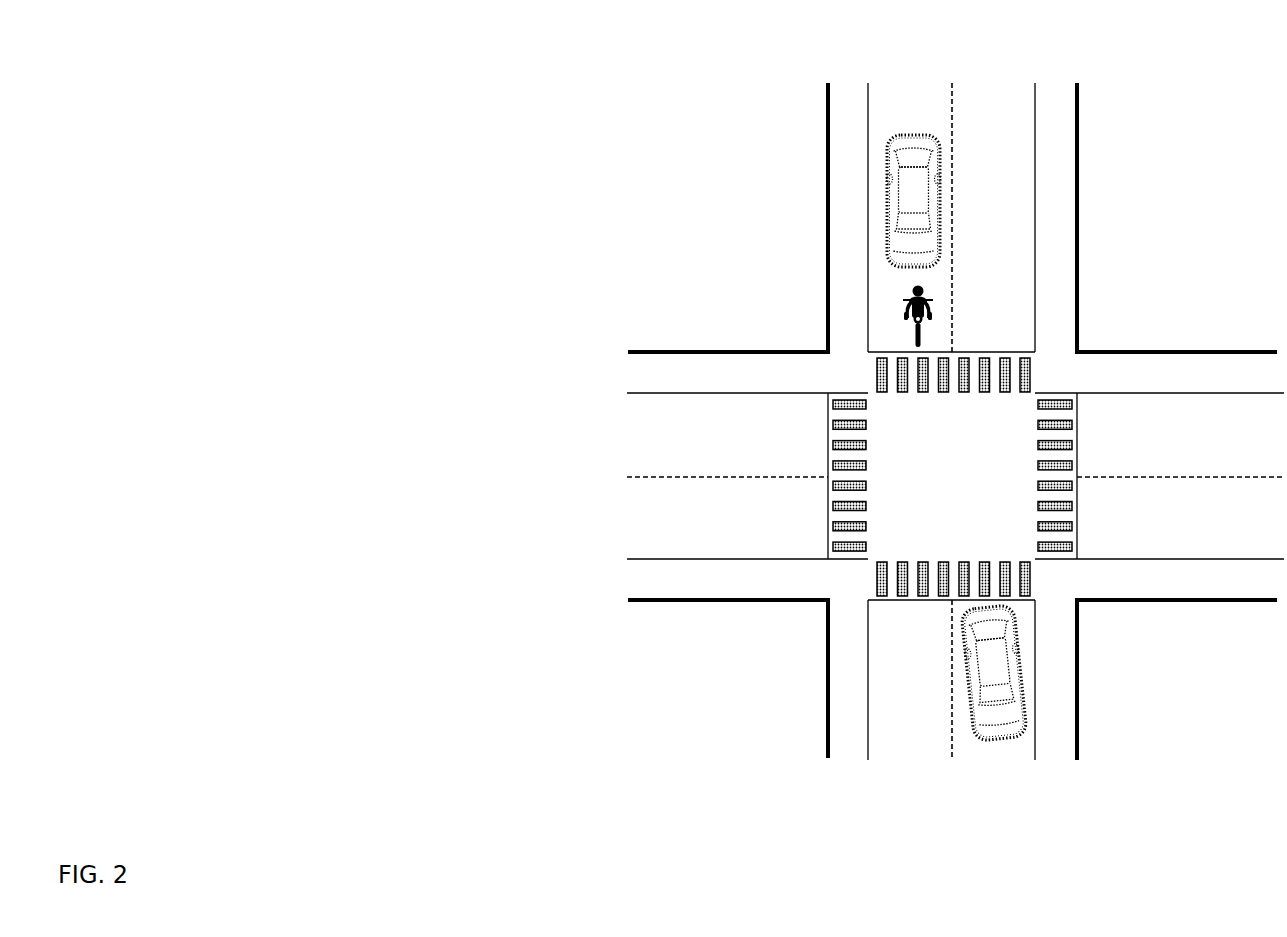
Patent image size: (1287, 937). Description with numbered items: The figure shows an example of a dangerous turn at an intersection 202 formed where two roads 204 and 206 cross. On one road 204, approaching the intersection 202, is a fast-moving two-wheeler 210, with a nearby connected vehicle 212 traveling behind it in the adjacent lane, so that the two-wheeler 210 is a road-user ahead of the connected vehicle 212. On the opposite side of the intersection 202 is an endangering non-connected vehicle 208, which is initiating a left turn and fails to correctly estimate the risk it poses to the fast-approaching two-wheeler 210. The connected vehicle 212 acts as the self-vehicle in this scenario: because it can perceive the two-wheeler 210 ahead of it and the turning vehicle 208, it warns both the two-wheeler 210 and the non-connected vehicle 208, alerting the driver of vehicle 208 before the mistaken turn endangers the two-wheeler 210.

The intersection 202 is at (952, 476).
The road 204 is at (952, 189).
The road 206 is at (1159, 576).
The endangering non-connected vehicle 208 is at (952, 673).
The two-wheeler 210 is at (966, 311).
The connected vehicle 212 is at (955, 201).